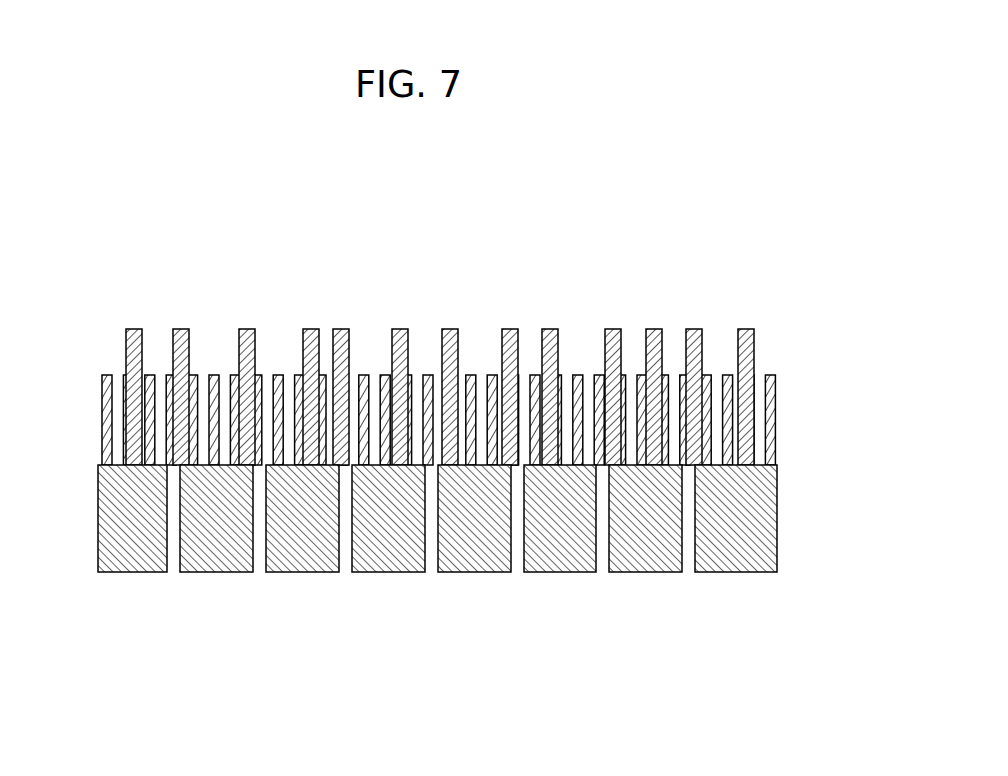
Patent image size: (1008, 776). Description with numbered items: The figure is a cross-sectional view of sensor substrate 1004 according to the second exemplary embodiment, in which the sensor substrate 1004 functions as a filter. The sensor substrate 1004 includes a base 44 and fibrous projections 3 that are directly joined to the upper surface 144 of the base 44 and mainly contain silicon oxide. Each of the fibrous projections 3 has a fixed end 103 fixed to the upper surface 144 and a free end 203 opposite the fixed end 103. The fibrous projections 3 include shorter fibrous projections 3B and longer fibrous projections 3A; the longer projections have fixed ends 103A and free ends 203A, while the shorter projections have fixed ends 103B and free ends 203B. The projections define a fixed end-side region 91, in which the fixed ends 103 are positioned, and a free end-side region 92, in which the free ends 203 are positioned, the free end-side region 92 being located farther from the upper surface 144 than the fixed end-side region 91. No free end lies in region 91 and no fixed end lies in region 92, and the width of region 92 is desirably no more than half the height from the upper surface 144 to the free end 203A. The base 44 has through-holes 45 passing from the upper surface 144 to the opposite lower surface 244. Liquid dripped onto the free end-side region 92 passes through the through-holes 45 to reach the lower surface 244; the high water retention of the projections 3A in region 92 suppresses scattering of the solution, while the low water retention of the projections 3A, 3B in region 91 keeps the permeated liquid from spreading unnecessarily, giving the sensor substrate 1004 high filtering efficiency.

The sensor substrate 1004 is at (750, 278).
The free end-side region 92 is at (95, 387).
The fixed end-side region 91 is at (95, 403).
The upper surface 144 is at (283, 463).
The free end of fibrous projection 3B 203B is at (492, 376).
The free end of fibrous projection 3A 203A is at (556, 328).
The free ends 203 is at (419, 366).
The fibrous projections 3A is at (752, 354).
The fibrous projections 3B is at (770, 443).
The fibrous projections 3 is at (494, 366).
The base 44 is at (762, 540).
The lower surface 244 is at (245, 573).
The through-holes 45 is at (431, 573).
The fixed end of fibrous projection 3B 103B is at (497, 458).
The fixed end of fibrous projection 3A 103A is at (547, 458).
The fixed ends 103 is at (570, 541).